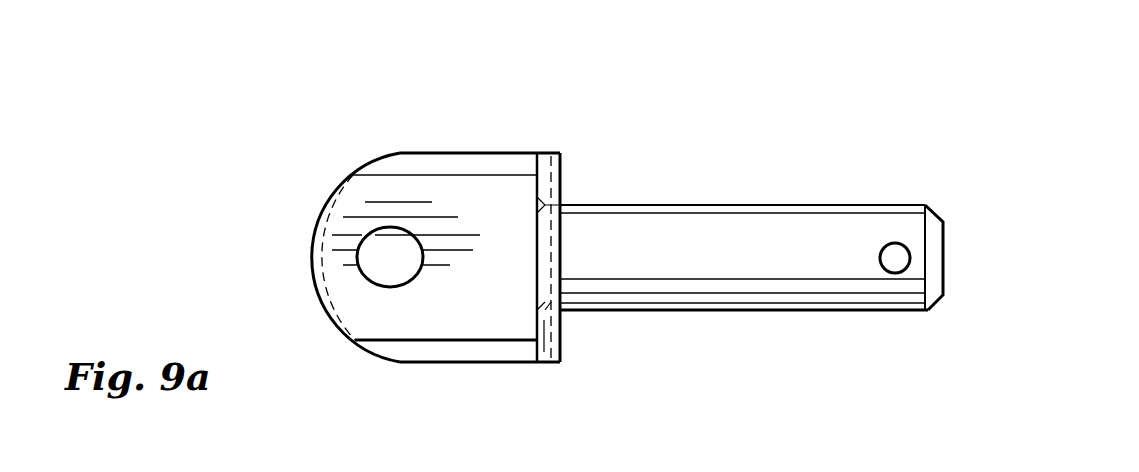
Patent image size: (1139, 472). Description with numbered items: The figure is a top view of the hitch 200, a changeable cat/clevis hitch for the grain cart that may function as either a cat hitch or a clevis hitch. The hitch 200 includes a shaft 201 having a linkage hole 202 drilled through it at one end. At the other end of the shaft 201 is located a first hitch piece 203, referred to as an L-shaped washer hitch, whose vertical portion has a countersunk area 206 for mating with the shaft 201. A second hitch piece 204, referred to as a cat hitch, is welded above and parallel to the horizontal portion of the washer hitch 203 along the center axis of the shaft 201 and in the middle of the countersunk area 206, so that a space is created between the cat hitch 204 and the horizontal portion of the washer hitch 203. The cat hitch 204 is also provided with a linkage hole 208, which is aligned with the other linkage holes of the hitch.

The hitch 200 is at (742, 168).
The shaft 201 is at (832, 218).
The linkage hole 202 is at (900, 247).
The first hitch piece 203 is at (552, 155).
The second hitch piece 204 is at (400, 193).
The countersunk area 206 is at (530, 197).
The linkage hole 208 is at (376, 250).